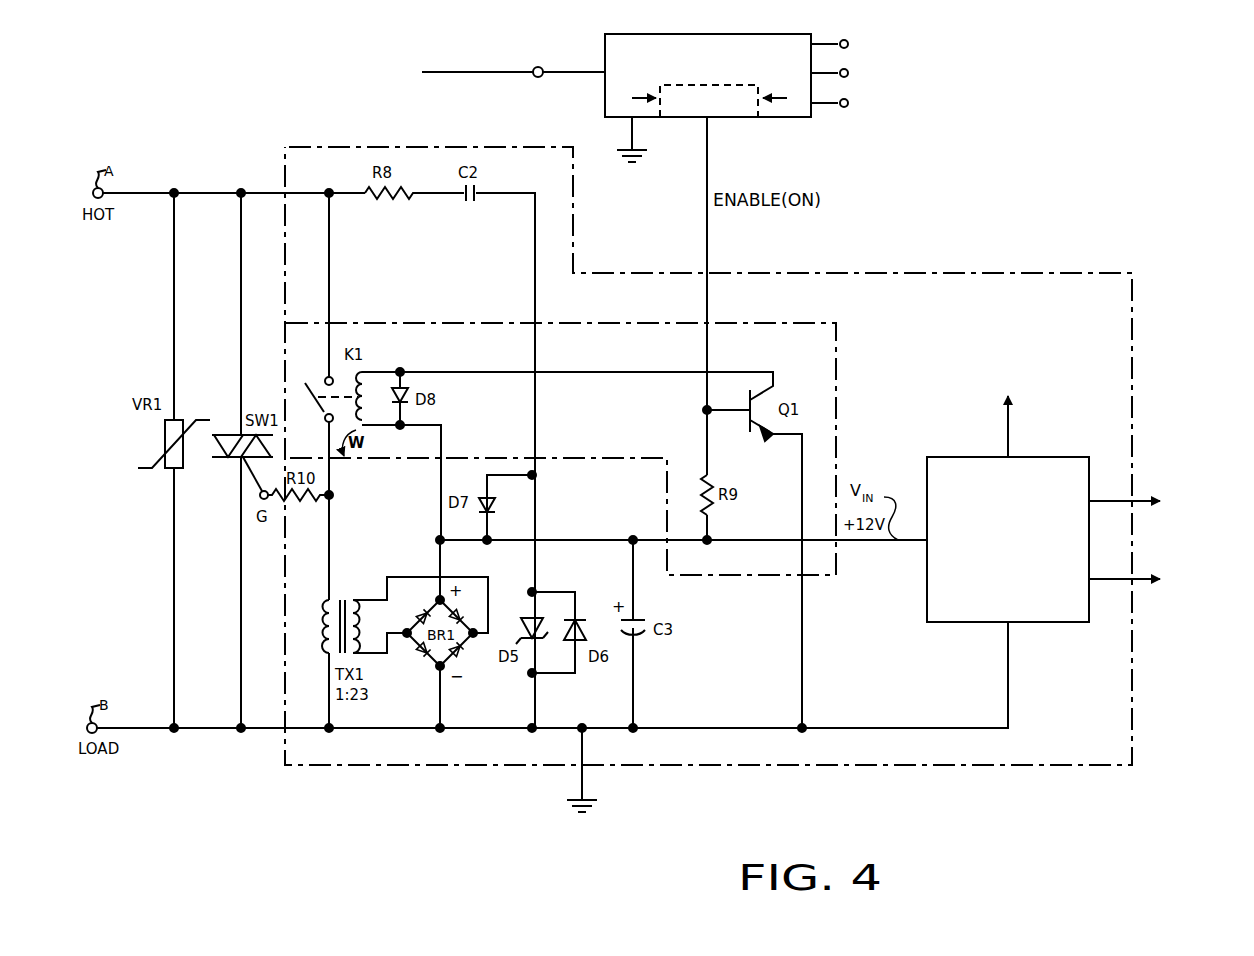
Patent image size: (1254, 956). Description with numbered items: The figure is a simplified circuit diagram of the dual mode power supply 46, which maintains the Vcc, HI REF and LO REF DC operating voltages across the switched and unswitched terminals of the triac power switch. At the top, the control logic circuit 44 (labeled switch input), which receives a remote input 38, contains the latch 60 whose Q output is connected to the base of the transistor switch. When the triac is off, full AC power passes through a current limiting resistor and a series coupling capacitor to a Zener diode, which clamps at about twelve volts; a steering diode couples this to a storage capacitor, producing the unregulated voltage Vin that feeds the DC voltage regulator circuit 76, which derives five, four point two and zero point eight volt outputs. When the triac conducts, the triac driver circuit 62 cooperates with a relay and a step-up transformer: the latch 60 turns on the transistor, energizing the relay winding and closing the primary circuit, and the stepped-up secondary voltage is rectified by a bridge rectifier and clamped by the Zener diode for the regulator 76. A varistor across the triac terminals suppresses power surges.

The remote input terminal 38 is at (536, 79).
The control logic circuit 44 is at (730, 84).
The dual mode power supply 46 is at (342, 143).
The latch 60 is at (740, 85).
The triac driver circuit 62 is at (842, 350).
The DC voltage regulator circuit 76 is at (945, 456).